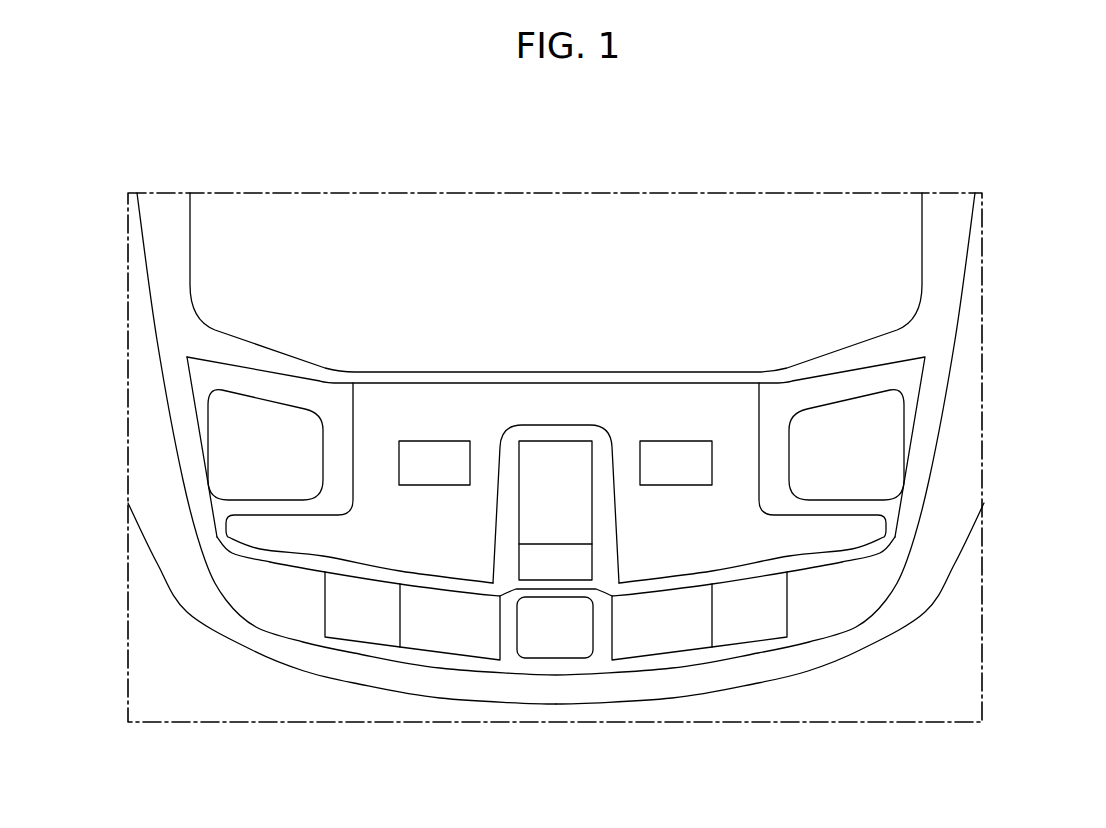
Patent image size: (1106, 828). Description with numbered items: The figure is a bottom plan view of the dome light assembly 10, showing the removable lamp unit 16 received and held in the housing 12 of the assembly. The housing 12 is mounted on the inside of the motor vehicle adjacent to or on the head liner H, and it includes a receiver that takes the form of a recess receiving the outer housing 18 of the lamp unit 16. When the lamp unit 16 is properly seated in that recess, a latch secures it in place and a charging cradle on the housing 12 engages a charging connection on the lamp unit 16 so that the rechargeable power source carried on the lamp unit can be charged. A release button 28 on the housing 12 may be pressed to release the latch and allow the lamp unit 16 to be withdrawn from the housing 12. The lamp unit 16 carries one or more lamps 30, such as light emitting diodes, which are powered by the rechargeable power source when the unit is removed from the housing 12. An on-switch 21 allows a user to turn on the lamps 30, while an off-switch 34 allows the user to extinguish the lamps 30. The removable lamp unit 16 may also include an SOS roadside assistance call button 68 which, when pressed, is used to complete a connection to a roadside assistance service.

The dome light assembly 10 is at (864, 180).
The housing 12 is at (927, 437).
The removable lamp unit 16 is at (229, 564).
The outer housing 18 is at (205, 492).
The on-switch 21 is at (422, 468).
The release button 28 is at (543, 635).
The lamps 30 is at (240, 447).
The off-switch 34 is at (688, 470).
The SOS roadside assistance call button 68 is at (537, 562).
The head liner H is at (930, 670).